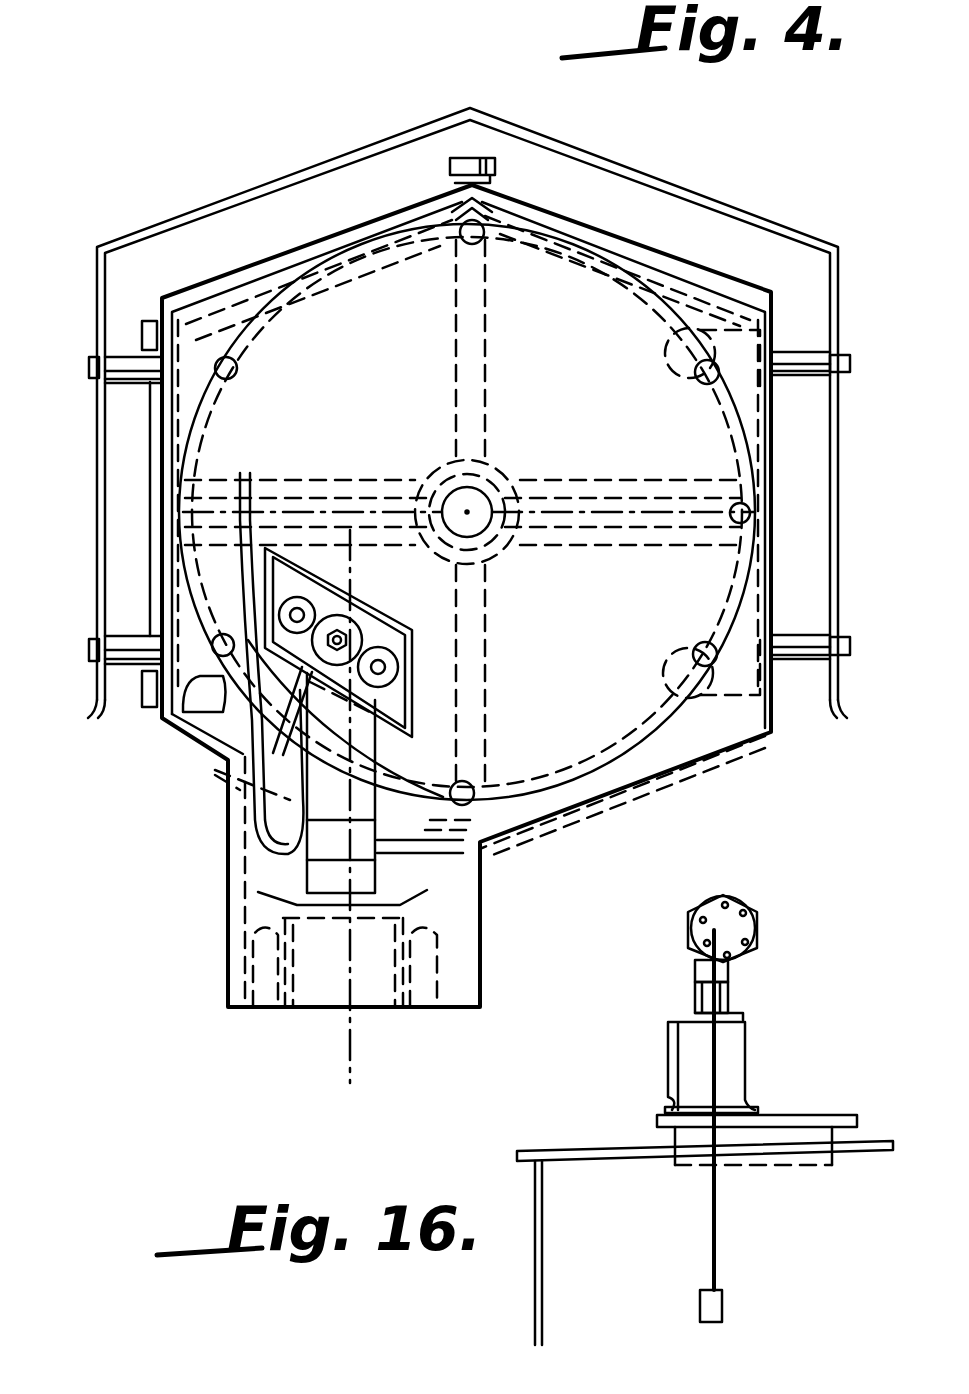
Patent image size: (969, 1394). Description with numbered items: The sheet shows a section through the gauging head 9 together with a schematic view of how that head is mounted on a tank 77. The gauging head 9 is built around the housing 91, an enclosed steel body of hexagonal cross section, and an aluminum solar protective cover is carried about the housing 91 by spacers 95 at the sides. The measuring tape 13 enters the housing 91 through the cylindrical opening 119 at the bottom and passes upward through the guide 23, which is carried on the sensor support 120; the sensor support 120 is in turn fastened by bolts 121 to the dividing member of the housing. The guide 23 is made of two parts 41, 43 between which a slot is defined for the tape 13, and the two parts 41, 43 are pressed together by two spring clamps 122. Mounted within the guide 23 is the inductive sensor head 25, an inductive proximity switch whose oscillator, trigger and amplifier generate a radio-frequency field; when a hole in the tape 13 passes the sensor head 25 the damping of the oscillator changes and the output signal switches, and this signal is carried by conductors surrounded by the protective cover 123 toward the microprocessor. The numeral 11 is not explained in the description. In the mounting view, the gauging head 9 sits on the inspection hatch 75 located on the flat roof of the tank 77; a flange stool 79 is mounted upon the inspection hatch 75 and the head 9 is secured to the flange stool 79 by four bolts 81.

In FIG. 4, the housing shell 11 is at (600, 783).
In FIG. 4, the tape 13 is at (352, 1048).
In FIG. 4, the guide 23 is at (366, 752).
In FIG. 4, the inductive sensor head 25 is at (320, 865).
In FIG. 4, the guide part 41 is at (320, 798).
In FIG. 4, the guide part 43 is at (447, 805).
In FIG. 4, the housing 91 is at (180, 297).
In FIG. 4, the spacers 95 is at (104, 362).
In FIG. 4, the cylindrical opening 119 is at (319, 1010).
In FIG. 4, the sensor support 120 is at (278, 578).
In FIG. 4, the bolts 121 is at (403, 672).
In FIG. 4, the spring clamps 122 is at (385, 836).
In FIG. 4, the protective cover 123 is at (268, 830).
In FIG. 16, the gauging head 9 is at (757, 918).
In FIG. 16, the inspection hatch 75 is at (688, 1068).
In FIG. 16, the tank 77 is at (577, 1133).
In FIG. 16, the flange stool 79 is at (728, 1000).
In FIG. 16, the bolts 81 is at (728, 968).